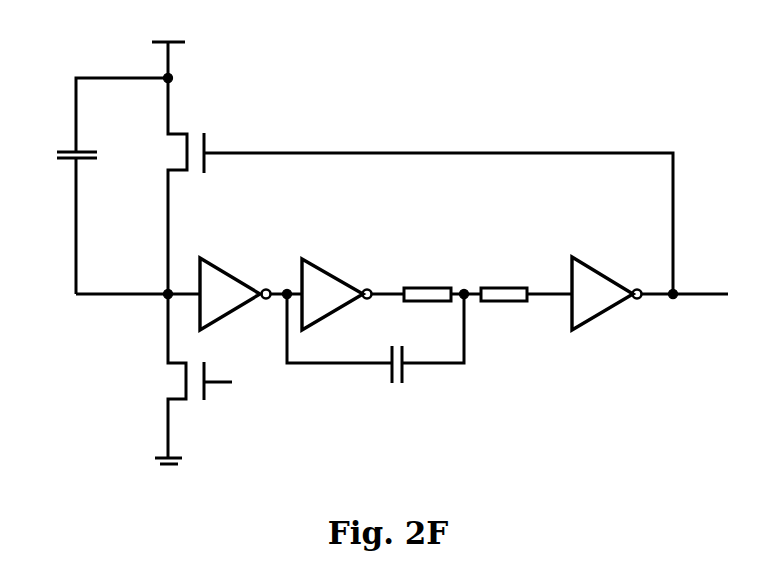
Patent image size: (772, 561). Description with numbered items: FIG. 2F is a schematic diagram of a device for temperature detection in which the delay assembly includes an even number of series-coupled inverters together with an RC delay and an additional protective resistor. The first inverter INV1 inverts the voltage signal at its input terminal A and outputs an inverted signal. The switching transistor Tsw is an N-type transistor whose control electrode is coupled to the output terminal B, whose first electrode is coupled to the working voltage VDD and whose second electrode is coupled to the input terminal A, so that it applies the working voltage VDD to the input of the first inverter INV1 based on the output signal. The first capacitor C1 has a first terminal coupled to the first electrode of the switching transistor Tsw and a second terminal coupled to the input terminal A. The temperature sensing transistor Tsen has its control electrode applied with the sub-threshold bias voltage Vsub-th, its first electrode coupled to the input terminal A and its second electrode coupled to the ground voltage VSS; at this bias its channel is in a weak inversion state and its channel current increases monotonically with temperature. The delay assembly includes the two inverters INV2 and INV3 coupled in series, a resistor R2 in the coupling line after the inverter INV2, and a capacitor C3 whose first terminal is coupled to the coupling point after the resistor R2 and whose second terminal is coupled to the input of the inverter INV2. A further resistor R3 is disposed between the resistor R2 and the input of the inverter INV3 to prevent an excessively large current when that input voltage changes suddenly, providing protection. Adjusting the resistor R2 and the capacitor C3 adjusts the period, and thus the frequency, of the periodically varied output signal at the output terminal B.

The working voltage VDD is at (168, 48).
The ground voltage VSS is at (168, 474).
The first capacitor C1 is at (104, 184).
The switching transistor Tsw is at (410, 186).
The temperature sensing transistor Tsen is at (187, 376).
The sub-threshold bias voltage Vsub-th is at (260, 379).
The input terminal A is at (159, 285).
The output terminal B is at (683, 283).
The first inverter INV1 is at (234, 280).
The inverter INV2 is at (337, 280).
The inverter INV3 is at (606, 280).
The resistor R2 is at (427, 283).
The resistor R3 is at (504, 283).
The capacitor C3 is at (376, 351).